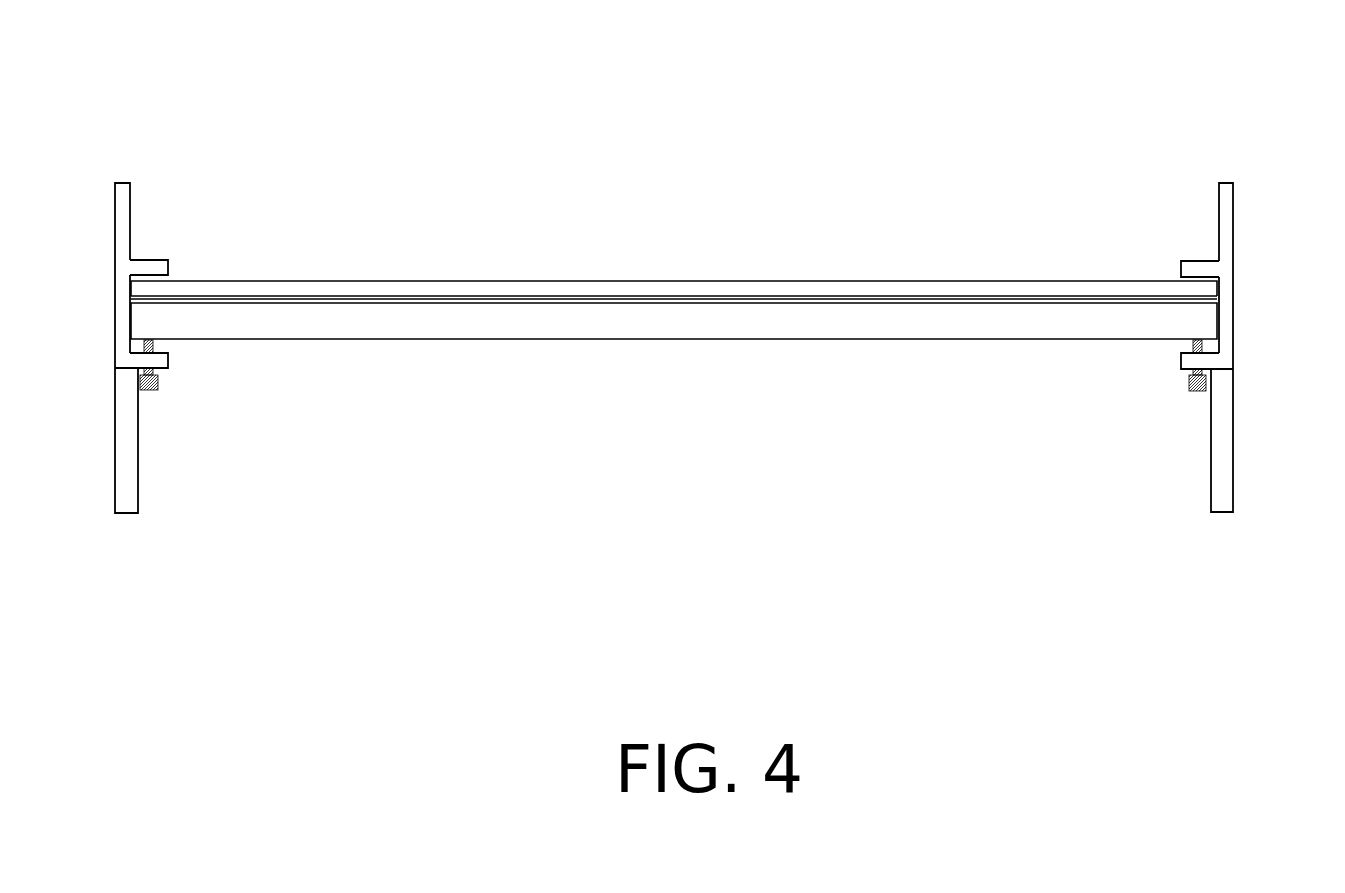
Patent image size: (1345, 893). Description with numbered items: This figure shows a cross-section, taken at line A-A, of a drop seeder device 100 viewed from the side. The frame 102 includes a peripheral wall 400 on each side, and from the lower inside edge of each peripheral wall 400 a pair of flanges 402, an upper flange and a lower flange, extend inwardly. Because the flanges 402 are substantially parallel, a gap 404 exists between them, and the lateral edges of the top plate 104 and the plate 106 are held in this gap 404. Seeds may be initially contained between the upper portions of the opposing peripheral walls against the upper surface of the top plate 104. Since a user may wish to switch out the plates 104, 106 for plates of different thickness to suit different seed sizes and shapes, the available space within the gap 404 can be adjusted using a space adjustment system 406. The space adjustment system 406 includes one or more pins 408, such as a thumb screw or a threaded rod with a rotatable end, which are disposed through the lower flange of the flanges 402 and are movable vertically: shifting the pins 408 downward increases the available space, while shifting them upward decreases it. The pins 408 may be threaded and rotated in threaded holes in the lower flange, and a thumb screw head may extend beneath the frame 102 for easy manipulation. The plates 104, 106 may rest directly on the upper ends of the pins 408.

The drop seeder device 100 is at (663, 83).
The frame 102 is at (1227, 182).
The top plate 104 is at (842, 278).
The plate 106 is at (683, 339).
The peripheral wall 400 is at (130, 213).
The flanges 402 is at (169, 268).
The gap 404 is at (1160, 353).
The space adjustment system 406 is at (159, 402).
The pins 408 is at (1193, 390).